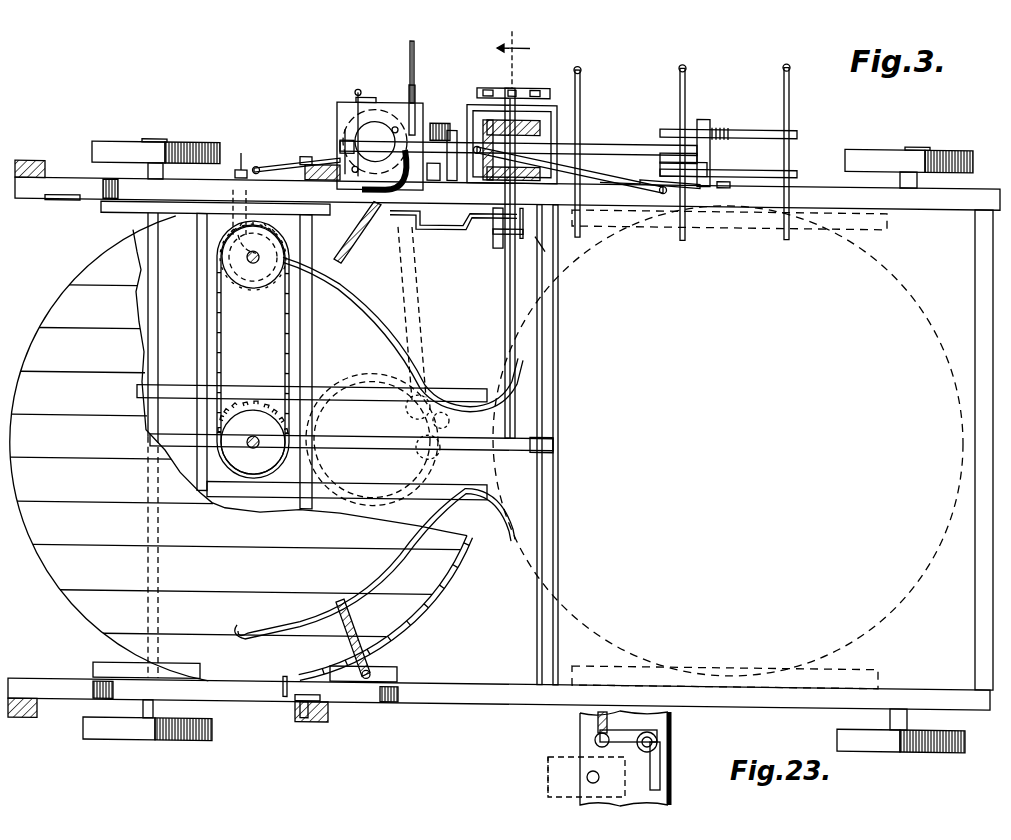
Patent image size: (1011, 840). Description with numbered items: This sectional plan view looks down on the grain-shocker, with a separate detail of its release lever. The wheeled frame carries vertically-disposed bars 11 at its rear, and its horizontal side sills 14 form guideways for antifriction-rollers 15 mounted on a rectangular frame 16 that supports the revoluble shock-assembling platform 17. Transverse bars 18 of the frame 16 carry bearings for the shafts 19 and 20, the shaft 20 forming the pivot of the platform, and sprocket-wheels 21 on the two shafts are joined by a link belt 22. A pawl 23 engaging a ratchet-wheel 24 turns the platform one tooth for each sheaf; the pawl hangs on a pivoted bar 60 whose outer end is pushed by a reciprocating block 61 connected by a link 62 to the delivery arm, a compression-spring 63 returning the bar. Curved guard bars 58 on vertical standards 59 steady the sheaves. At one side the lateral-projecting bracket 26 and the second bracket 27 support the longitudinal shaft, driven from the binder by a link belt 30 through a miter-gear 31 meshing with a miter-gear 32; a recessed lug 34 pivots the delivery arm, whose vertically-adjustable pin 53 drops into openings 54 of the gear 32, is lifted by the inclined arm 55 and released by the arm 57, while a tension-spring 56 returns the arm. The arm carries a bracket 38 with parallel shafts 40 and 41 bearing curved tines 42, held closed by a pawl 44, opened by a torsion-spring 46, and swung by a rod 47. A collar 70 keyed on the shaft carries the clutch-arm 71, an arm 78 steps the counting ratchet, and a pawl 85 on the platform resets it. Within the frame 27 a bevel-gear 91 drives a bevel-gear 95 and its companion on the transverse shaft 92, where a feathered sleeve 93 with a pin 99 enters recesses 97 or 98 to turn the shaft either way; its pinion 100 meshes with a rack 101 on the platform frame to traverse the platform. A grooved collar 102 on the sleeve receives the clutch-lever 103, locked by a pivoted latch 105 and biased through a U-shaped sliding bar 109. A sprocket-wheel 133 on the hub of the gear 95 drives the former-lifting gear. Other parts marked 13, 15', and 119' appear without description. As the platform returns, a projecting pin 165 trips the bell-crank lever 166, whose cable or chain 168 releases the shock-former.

In FIG. 3, the vertically-disposed bars 11 is at (30, 160).
In FIG. 23, the vertically-disposed bars 11 is at (672, 778).
In FIG. 3, the shaft 13 is at (585, 143).
In FIG. 3, the horizontal side sills 14 is at (128, 158).
In FIG. 3, the antifriction-rollers 15 is at (224, 439).
In FIG. 3, the stop 15' is at (724, 195).
In FIG. 3, the rectangular frame 16 is at (115, 211).
In FIG. 23, the rectangular frame 16 is at (548, 760).
In FIG. 3, the revoluble shock-assembling platform 17 is at (440, 560).
In FIG. 3, the transverse bars 18 is at (197, 350).
In FIG. 3, the vertically-disposed shaft 19 is at (253, 442).
In FIG. 3, the vertically-disposed shaft 20 is at (248, 283).
In FIG. 3, the sprocket-wheels 21 is at (262, 285).
In FIG. 3, the link belt 22 is at (285, 340).
In FIG. 3, the pawl 23 is at (228, 258).
In FIG. 3, the ratchet-wheel 24 is at (222, 270).
In FIG. 3, the lateral-projecting bracket 26 is at (378, 100).
In FIG. 3, the second bracket 27 is at (478, 95).
In FIG. 3, the link belt 30 is at (415, 45).
In FIG. 3, the miter-gear 31 is at (390, 130).
In FIG. 3, the miter-gear 32 is at (370, 120).
In FIG. 3, the recessed lug 34 is at (345, 125).
In FIG. 3, the bracket 38 is at (710, 150).
In FIG. 3, the shaft 40 is at (745, 121).
In FIG. 3, the shaft 41 is at (765, 161).
In FIG. 3, the curved tines or prongs 42 is at (580, 78).
In FIG. 3, the pawl 44 is at (666, 190).
In FIG. 3, the helical torsion-spring 46 is at (455, 135).
In FIG. 3, the rod 47 is at (615, 188).
In FIG. 3, the vertically-adjustable pin 53 is at (305, 153).
In FIG. 3, the openings 54 is at (395, 112).
In FIG. 3, the arm 55 is at (385, 125).
In FIG. 3, the tension-spring 56 is at (352, 160).
In FIG. 3, the arm 57 is at (360, 85).
In FIG. 3, the curved arms or bars 58 is at (380, 310).
In FIG. 3, the vertical standards 59 is at (345, 250).
In FIG. 3, the pivoted bar 60 is at (241, 150).
In FIG. 3, the reciprocating block 61 is at (258, 163).
In FIG. 3, the link 62 is at (293, 160).
In FIG. 3, the compression-spring 63 is at (230, 215).
In FIG. 3, the collar 70 is at (442, 118).
In FIG. 3, the clutch-arm 71 is at (440, 166).
In FIG. 3, the arm 78 is at (360, 185).
In FIG. 3, the pawl 85 is at (365, 215).
In FIG. 3, the bevel-gear 91 is at (535, 171).
In FIG. 3, the transversely-disposed shaft 92 is at (505, 320).
In FIG. 3, the sleeve 93 is at (505, 260).
In FIG. 3, the bevel-gear 95 is at (535, 112).
In FIG. 3, the recesses 97 is at (492, 177).
In FIG. 3, the recesses 98 is at (525, 125).
In FIG. 3, the pin 99 is at (505, 150).
In FIG. 3, the pinion 100 is at (538, 448).
In FIG. 3, the rack 101 is at (556, 438).
In FIG. 3, the grooved collar 102 is at (545, 245).
In FIG. 3, the clutch-lever 103 is at (425, 225).
In FIG. 3, the pivoted latch 105 is at (492, 235).
In FIG. 3, the U-shaped sliding bar 109 is at (445, 240).
In FIG. 3, the plate 119' is at (47, 221).
In FIG. 3, the sprocket-wheel 133 is at (525, 85).
In FIG. 3, the projecting pin 165 is at (284, 700).
In FIG. 23, the projecting pin 165 is at (586, 777).
In FIG. 3, the bell-crank lever 166 is at (300, 690).
In FIG. 23, the bell-crank lever 166 is at (672, 735).
In FIG. 3, the flexible cable or chain 168 is at (320, 698).
In FIG. 23, the flexible cable or chain 168 is at (596, 720).